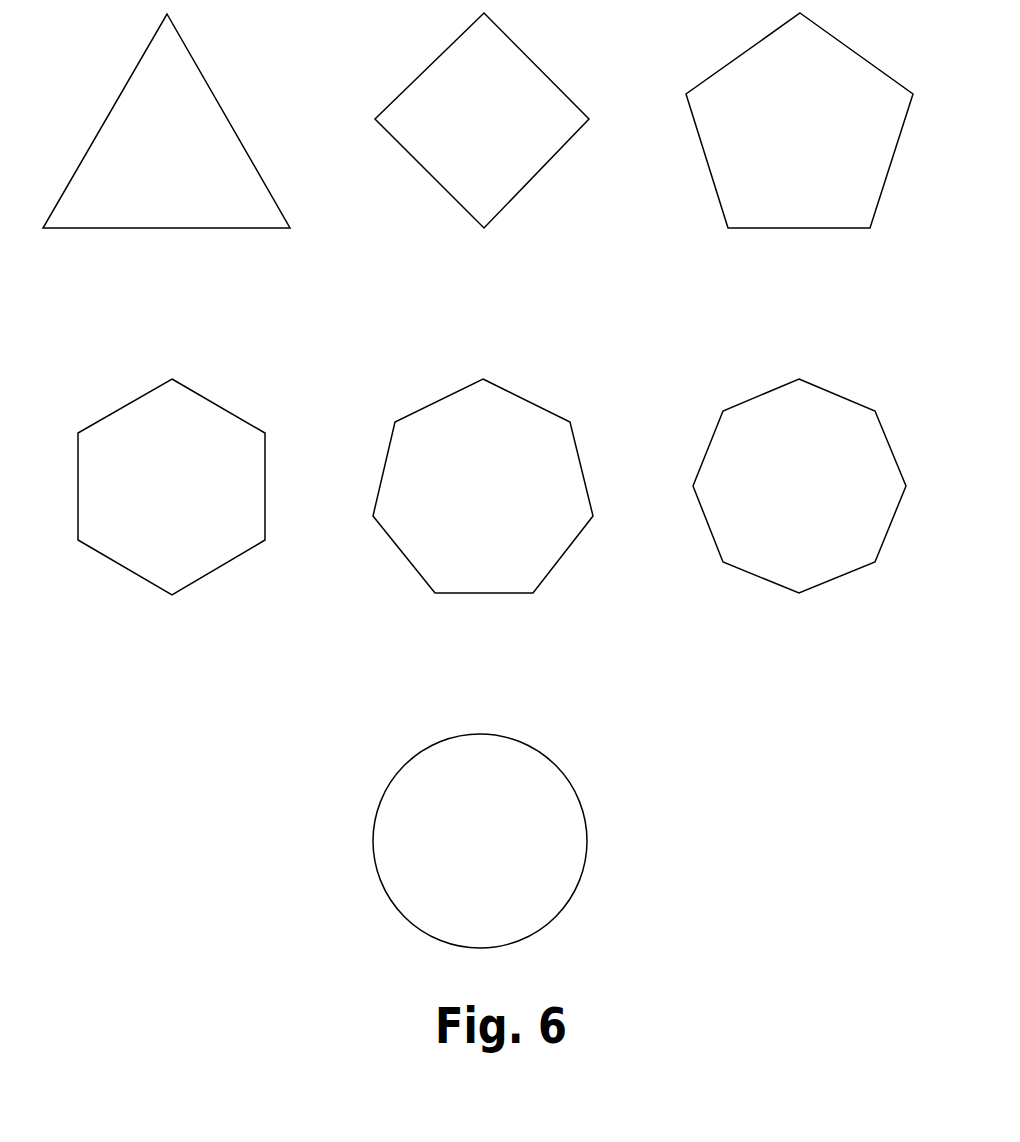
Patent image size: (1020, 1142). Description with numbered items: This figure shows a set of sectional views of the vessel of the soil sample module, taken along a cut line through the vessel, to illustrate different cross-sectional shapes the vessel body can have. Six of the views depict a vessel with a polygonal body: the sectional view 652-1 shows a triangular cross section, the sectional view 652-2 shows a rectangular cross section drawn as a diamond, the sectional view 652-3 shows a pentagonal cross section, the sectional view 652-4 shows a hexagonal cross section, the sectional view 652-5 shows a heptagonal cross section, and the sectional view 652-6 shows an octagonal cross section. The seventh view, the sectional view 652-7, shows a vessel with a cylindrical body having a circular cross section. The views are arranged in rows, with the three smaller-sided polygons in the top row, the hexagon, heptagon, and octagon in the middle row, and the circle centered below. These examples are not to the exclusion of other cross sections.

The sectional view 652-1 is at (203, 76).
The sectional view 652-2 is at (547, 77).
The sectional view 652-3 is at (850, 47).
The sectional view 652-4 is at (213, 573).
The sectional view 652-5 is at (552, 573).
The sectional view 652-6 is at (847, 573).
The sectional view 652-7 is at (558, 915).